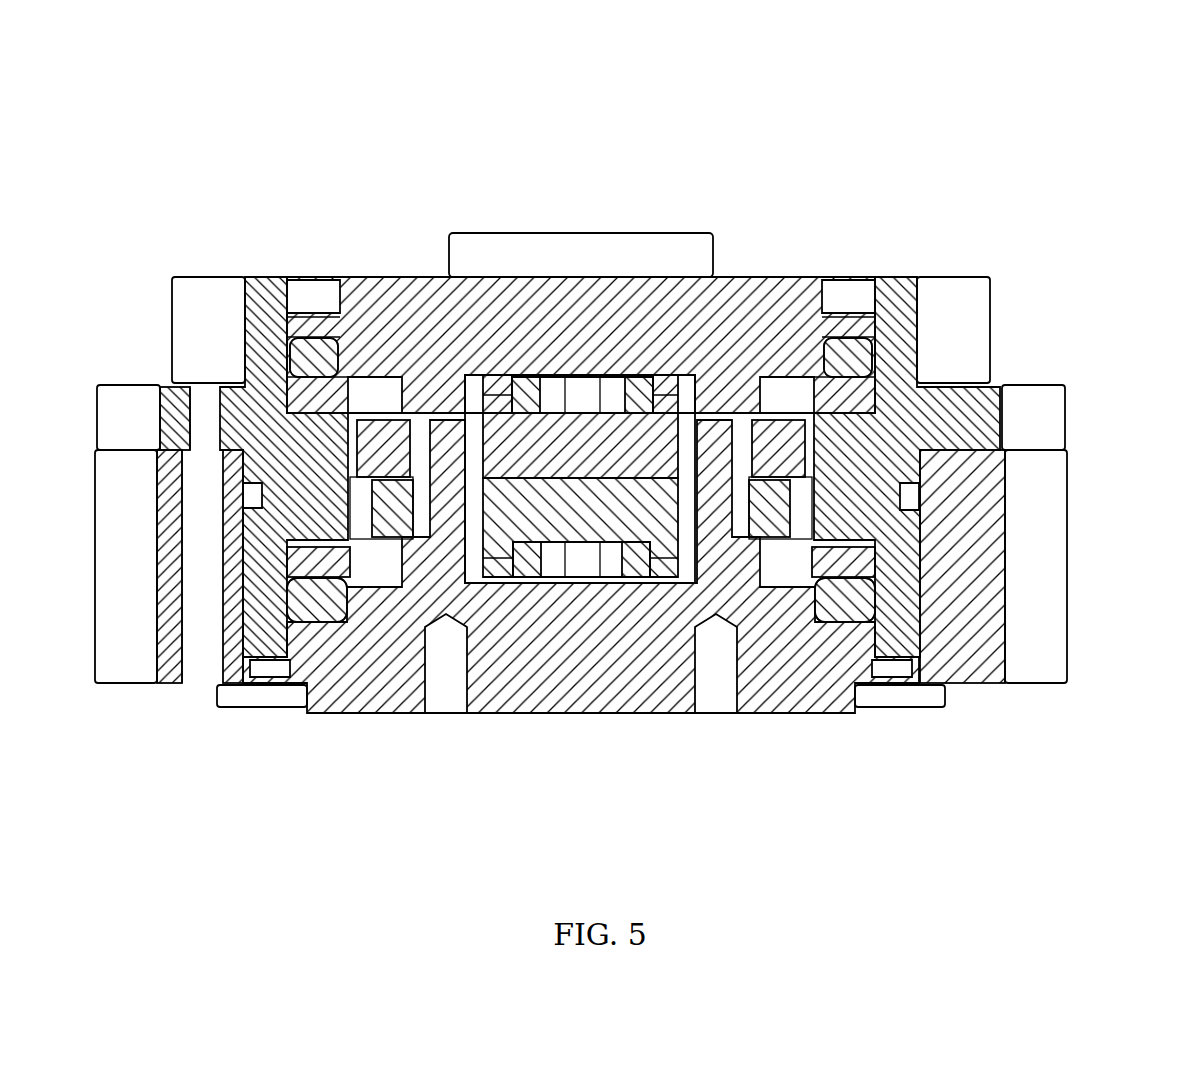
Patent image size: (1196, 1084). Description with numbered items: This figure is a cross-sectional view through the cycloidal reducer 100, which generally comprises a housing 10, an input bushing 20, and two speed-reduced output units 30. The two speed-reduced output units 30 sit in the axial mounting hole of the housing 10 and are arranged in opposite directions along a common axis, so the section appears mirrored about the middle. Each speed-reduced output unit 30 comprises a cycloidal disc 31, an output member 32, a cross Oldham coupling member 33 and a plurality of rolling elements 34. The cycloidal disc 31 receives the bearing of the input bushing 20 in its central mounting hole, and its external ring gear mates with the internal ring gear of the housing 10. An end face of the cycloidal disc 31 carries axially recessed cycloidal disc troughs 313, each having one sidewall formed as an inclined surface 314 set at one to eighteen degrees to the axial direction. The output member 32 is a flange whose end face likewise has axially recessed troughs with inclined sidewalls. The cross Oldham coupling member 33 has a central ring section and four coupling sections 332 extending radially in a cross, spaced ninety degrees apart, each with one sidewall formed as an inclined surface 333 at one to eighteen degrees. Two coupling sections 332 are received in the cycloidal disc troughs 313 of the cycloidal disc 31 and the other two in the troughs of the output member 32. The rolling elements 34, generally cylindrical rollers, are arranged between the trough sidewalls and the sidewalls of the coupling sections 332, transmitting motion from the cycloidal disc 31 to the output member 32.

The cycloidal reducer 100 is at (1112, 128).
The housing 10 is at (950, 400).
The input bushing 20 is at (690, 213).
The speed-reduced output unit 30 is at (338, 152).
The cycloidal disc 31 is at (662, 453).
The output member 32 is at (399, 300).
The cross Oldham coupling member 33 is at (541, 165).
The rolling elements 34 is at (513, 390).
The cycloidal disc troughs 313 is at (605, 410).
The inclined surface 314 is at (485, 395).
The coupling sections 332 is at (585, 405).
The inclined surface 333 is at (553, 393).